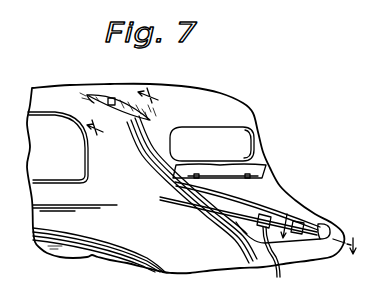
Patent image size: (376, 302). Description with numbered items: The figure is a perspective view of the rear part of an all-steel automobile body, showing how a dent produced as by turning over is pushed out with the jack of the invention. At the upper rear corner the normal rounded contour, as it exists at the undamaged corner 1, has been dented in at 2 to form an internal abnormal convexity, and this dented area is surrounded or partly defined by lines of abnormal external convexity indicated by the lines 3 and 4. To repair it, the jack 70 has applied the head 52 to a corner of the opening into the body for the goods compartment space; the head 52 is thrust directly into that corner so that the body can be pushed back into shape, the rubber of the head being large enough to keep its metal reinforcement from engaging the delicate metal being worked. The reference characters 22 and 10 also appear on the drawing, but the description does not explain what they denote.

The undamaged corner 1 is at (249, 103).
The dent 2 is at (117, 98).
The line of external convexity 3 is at (122, 102).
The line of external convexity 4 is at (92, 103).
The direction arrows 22 is at (132, 116).
The flow direction arrows 10 is at (328, 230).
The head 52 is at (328, 229).
The jack 70 is at (274, 220).